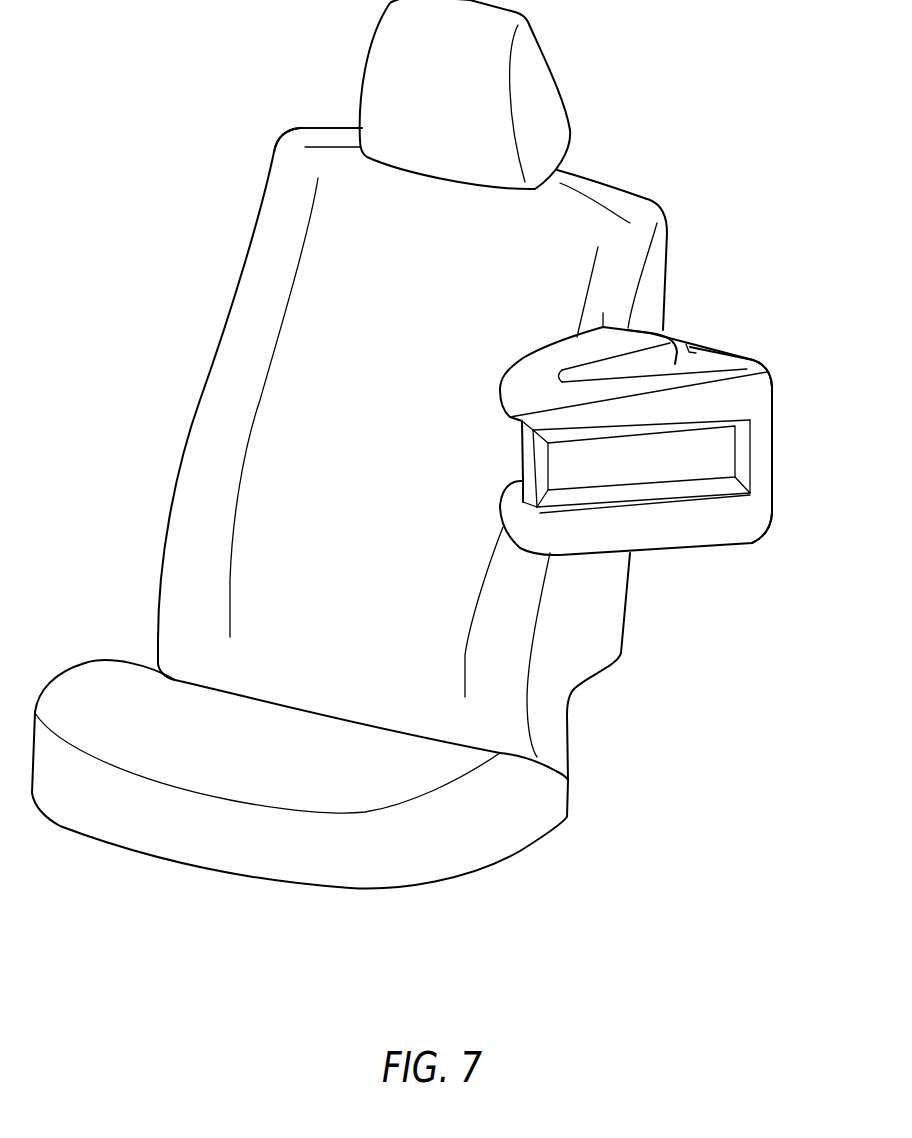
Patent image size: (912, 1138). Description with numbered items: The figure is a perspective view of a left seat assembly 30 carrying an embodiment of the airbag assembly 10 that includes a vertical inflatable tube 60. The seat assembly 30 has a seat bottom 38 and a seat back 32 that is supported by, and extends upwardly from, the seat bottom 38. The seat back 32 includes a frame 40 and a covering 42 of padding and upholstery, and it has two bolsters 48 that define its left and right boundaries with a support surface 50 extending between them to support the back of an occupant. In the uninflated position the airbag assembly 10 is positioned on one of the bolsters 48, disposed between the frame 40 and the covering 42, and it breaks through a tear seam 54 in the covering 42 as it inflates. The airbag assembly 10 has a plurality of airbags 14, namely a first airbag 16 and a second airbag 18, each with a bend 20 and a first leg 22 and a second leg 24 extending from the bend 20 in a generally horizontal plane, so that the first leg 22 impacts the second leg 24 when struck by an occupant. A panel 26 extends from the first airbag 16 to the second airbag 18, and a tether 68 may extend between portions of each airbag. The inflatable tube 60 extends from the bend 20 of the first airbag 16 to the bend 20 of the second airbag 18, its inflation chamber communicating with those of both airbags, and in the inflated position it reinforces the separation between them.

The airbag assembly 10 is at (702, 605).
The airbags 14 is at (747, 388).
The first airbag 16 is at (517, 402).
The second airbag 18 is at (515, 517).
The bend 20 is at (537, 382).
The first leg 22 is at (648, 338).
The second leg 24 is at (732, 363).
The panel 26 is at (672, 473).
The seat assembly 30 is at (203, 308).
The seat back 32 is at (307, 163).
The seat bottom 38 is at (493, 817).
The frame 40 is at (327, 157).
The covering 42 is at (409, 284).
The bolsters 48 is at (268, 250).
The support surface 50 is at (530, 237).
The tear seam 54 is at (606, 318).
The inflatable tube 60 is at (527, 458).
The tether 68 is at (690, 346).